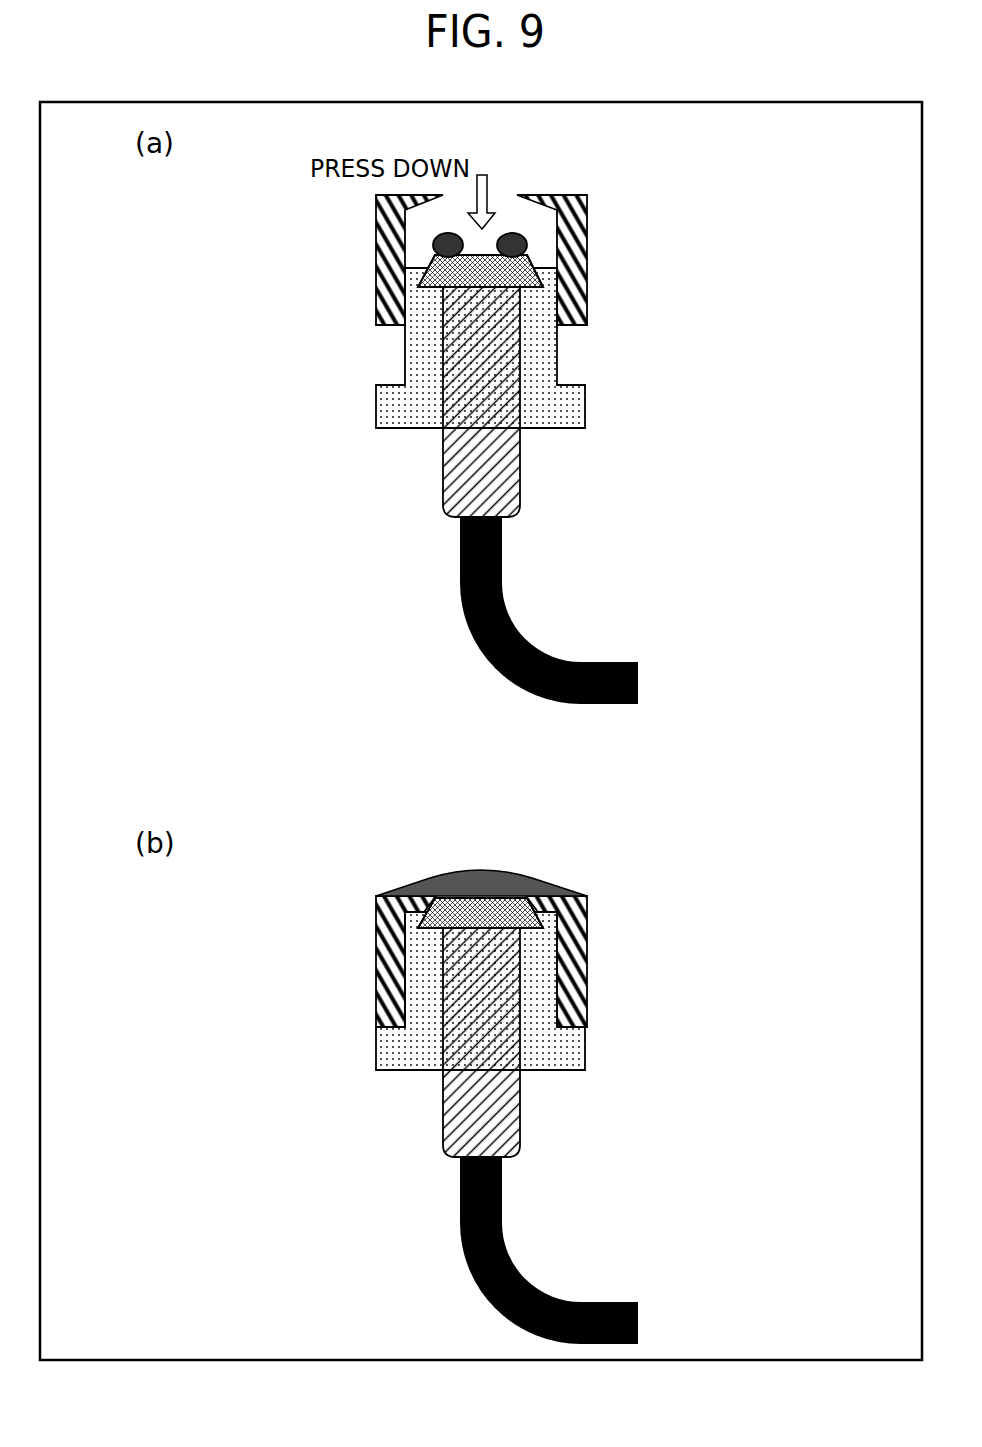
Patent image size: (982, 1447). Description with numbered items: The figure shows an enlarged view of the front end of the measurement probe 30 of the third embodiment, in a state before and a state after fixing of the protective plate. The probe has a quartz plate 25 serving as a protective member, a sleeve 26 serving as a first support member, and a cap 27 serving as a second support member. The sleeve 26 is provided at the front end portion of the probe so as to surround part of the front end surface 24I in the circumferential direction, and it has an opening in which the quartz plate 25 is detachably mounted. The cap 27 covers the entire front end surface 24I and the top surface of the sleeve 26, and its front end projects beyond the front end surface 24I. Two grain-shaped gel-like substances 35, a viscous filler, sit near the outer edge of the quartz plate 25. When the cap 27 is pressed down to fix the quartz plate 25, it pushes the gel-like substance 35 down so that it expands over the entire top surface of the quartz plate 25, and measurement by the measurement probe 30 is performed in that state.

The front end surface 24I is at (485, 287).
The quartz plate 25 is at (437, 268).
The sleeve 26 is at (550, 415).
The cap 27 is at (580, 258).
The measurement probe 30 is at (366, 488).
The gel-like substance 35 is at (436, 238).